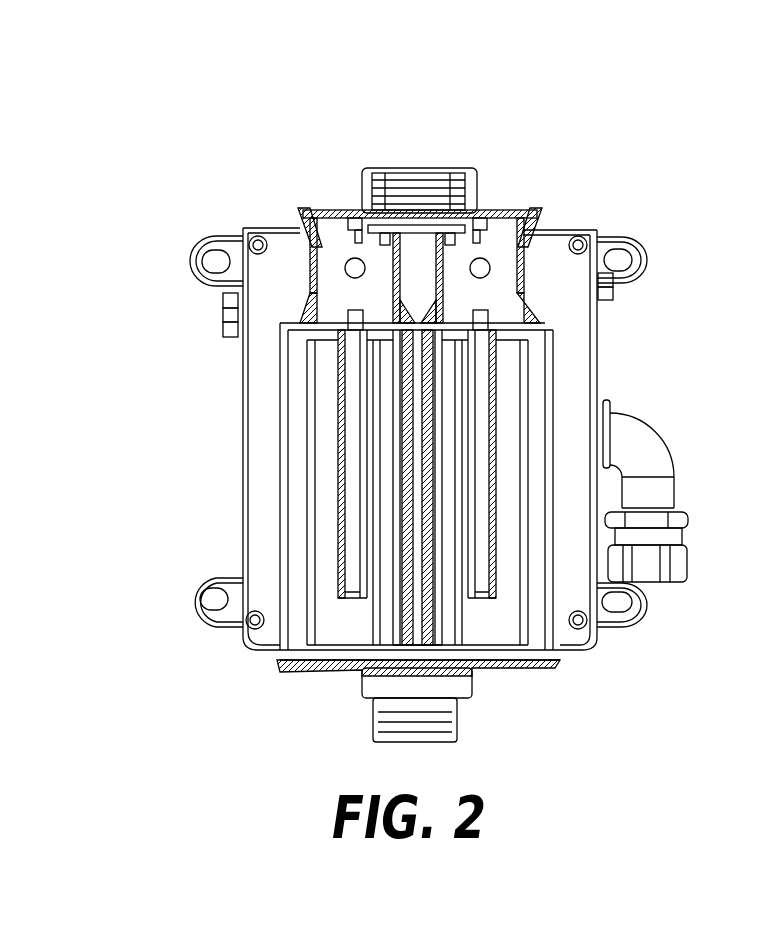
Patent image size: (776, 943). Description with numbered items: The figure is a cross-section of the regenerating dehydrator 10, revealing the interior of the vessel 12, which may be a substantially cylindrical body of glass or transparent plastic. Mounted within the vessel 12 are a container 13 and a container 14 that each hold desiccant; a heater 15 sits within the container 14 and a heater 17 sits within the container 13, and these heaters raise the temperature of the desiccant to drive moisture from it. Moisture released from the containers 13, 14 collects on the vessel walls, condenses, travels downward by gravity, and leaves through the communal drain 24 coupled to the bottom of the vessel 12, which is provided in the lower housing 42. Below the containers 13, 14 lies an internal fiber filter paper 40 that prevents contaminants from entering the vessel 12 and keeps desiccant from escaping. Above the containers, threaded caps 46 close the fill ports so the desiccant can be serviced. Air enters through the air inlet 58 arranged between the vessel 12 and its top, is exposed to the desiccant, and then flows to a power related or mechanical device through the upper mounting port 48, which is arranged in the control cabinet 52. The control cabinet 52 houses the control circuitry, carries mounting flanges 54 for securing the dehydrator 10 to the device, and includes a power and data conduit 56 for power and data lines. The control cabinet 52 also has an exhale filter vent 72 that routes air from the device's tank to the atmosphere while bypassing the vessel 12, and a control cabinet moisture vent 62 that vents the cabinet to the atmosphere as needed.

The dehydrator 10 is at (458, 85).
The vessel 12 is at (553, 452).
The container 13 is at (530, 415).
The container 14 is at (312, 530).
The heater 15 is at (355, 305).
The heater 17 is at (490, 303).
The communal drain 24 is at (462, 725).
The internal fiber filter paper 40 is at (548, 632).
The lower housing 42 is at (277, 661).
The caps 46 is at (318, 203).
The upper mounting port 48 is at (425, 168).
The control cabinet 52 is at (585, 340).
The mounting flanges 54 is at (215, 238).
The power and data conduit 56 is at (676, 470).
The air inlet 58 is at (278, 378).
The control cabinet moisture vent 62 is at (222, 318).
The exhale filter vent 72 is at (615, 300).